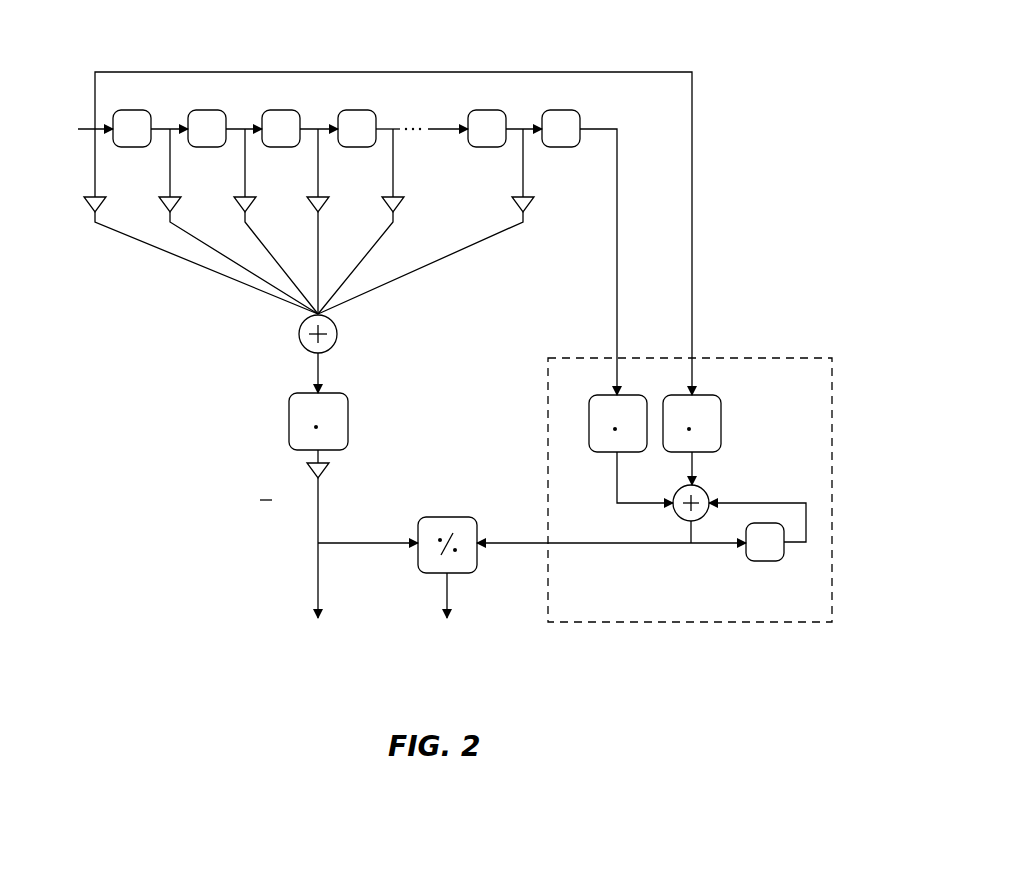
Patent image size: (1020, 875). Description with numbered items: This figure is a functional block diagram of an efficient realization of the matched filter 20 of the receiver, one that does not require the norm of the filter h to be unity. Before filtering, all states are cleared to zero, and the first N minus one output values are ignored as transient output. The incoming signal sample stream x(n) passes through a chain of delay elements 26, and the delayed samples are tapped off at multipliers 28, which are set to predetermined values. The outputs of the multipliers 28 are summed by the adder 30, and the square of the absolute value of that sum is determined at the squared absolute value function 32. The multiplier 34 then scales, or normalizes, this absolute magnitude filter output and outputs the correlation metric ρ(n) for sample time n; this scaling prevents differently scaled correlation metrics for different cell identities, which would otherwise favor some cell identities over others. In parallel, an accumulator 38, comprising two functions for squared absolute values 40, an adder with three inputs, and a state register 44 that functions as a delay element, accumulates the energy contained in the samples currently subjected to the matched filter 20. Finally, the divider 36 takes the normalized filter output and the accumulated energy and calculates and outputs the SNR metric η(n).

The matched filter 20 is at (783, 128).
The delay elements 26 is at (212, 110).
The multipliers 28 is at (235, 203).
The adder 30 is at (337, 330).
The squared absolute value function 32 is at (348, 413).
The multiplier 34 is at (329, 470).
The divider 36 is at (447, 517).
The accumulator 38 is at (783, 358).
The functions for squared absolute values 40 is at (627, 393).
The state register 44 is at (775, 561).